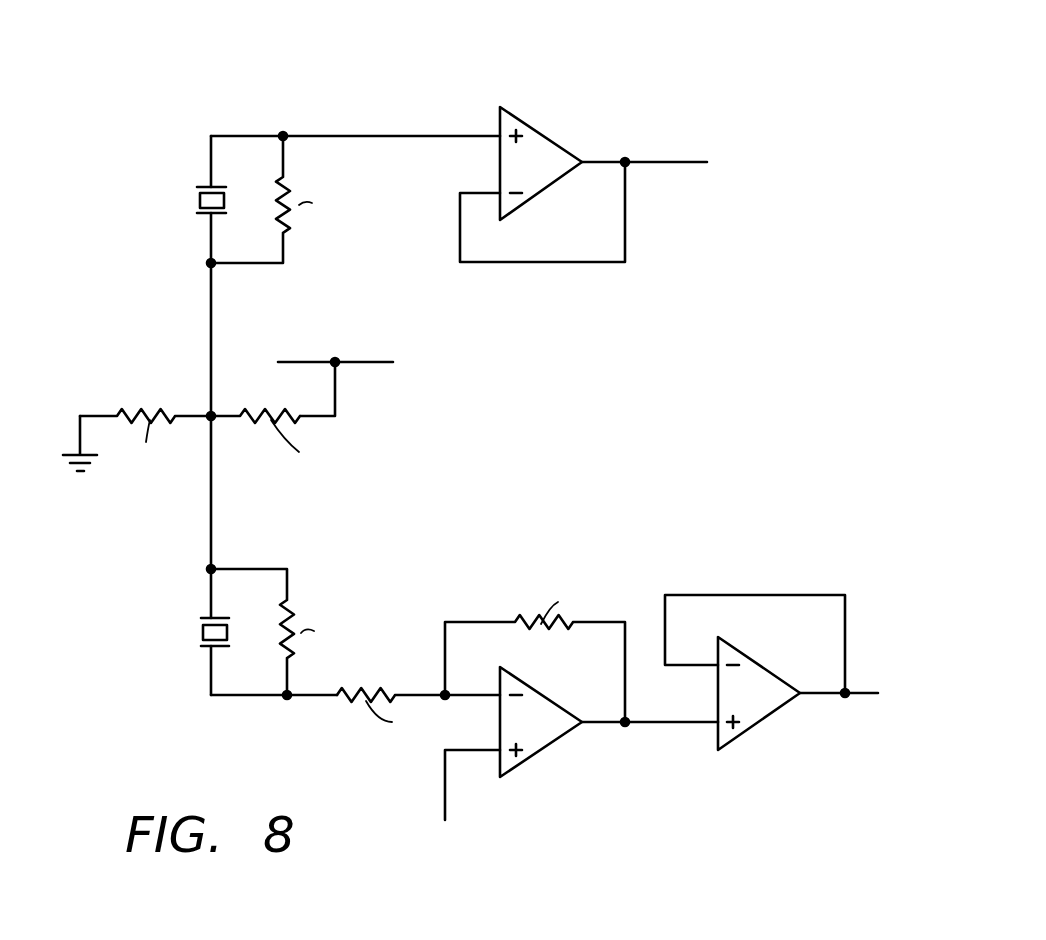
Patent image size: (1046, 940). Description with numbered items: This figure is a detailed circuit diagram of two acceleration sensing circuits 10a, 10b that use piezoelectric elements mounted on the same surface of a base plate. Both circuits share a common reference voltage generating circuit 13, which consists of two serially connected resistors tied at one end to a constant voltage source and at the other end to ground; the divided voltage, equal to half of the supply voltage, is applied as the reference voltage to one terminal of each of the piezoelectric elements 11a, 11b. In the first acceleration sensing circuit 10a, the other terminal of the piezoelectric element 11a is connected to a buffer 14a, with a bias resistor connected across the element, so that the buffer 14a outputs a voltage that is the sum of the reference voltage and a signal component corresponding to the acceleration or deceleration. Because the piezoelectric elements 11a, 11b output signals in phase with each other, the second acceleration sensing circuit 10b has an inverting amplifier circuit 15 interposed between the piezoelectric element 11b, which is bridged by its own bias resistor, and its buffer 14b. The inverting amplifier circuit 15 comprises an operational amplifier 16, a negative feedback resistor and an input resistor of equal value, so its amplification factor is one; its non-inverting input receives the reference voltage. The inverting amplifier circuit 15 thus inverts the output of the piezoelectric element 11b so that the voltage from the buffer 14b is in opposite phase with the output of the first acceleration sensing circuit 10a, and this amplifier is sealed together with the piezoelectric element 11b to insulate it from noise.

The acceleration sensing circuit 10a is at (306, 152).
The acceleration sensing circuit 10b is at (236, 671).
The piezoelectric element 11a is at (198, 200).
The piezoelectric element 11b is at (202, 630).
The reference voltage generating circuit 13 is at (133, 368).
The buffer 14a is at (527, 122).
The buffer 14b is at (771, 713).
The inverting amplifier circuit 15 is at (527, 713).
The operational amplifier 16 is at (546, 746).